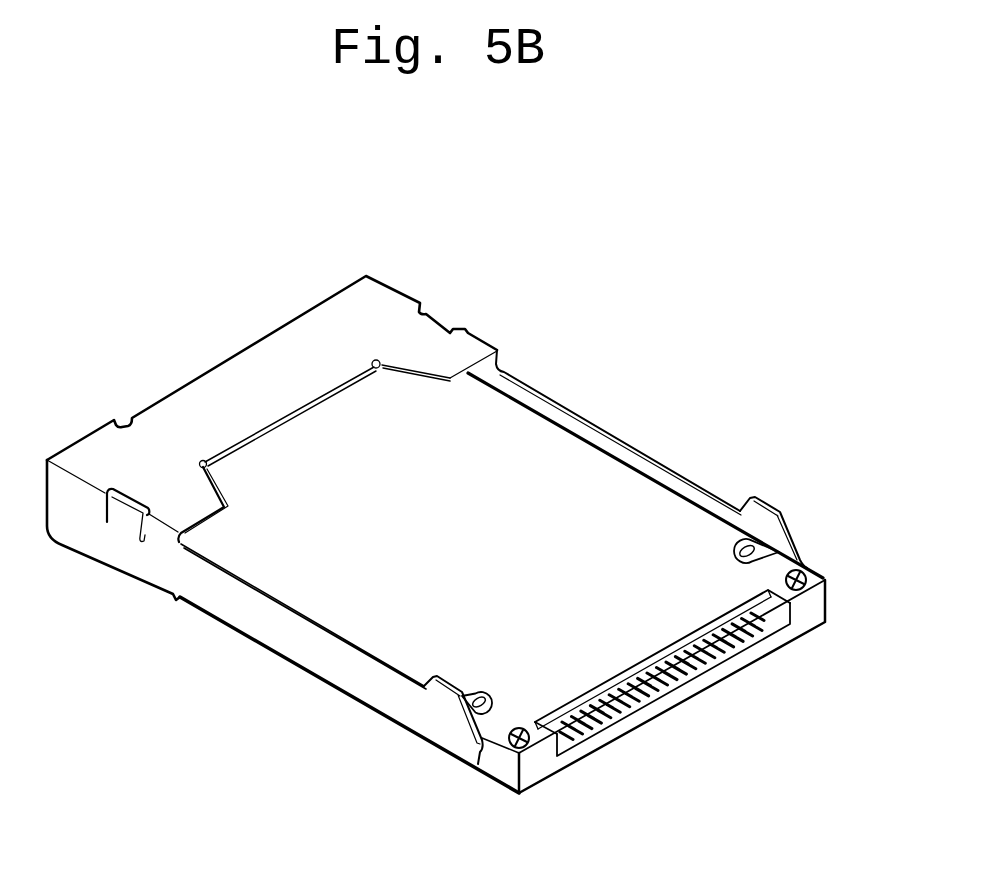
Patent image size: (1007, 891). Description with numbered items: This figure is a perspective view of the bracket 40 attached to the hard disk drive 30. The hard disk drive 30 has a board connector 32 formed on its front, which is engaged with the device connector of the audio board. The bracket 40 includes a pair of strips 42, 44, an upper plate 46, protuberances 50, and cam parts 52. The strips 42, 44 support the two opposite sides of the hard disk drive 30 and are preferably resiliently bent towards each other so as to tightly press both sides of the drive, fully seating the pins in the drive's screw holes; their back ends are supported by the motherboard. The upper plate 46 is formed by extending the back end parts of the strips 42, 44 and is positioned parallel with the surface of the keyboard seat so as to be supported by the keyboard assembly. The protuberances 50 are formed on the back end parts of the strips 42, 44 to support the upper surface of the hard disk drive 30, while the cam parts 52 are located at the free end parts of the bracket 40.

The hard disk drive 30 is at (653, 697).
The board connector 32 is at (597, 723).
The bracket 40 is at (461, 534).
The strip 42 is at (297, 648).
The strip 44 is at (617, 450).
The upper plate 46 is at (213, 383).
The protuberance 50 is at (124, 513).
The cam part 52 is at (797, 538).